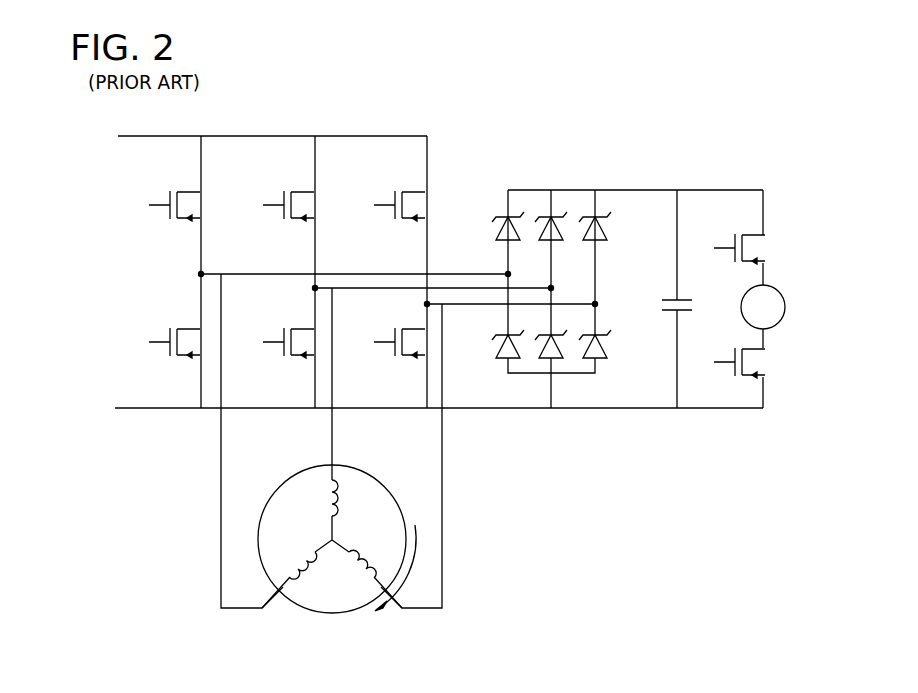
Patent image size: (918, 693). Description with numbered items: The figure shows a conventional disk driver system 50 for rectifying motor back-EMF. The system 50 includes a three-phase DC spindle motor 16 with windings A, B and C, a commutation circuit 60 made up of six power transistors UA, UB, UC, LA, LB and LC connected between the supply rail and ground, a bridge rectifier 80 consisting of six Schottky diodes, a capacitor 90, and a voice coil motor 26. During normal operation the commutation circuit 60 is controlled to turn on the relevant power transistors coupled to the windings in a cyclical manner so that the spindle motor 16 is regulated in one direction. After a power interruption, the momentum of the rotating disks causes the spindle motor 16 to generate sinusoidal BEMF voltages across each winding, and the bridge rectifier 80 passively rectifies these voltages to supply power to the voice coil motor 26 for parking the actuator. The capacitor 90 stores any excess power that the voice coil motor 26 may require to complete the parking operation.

The disk driver system 50 is at (488, 142).
The commutation circuit 60 is at (430, 130).
The bridge rectifier 80 is at (595, 184).
The capacitor 90 is at (569, 369).
The VCM 26 is at (778, 291).
The 3-phase DC spindle motor 16 is at (315, 612).